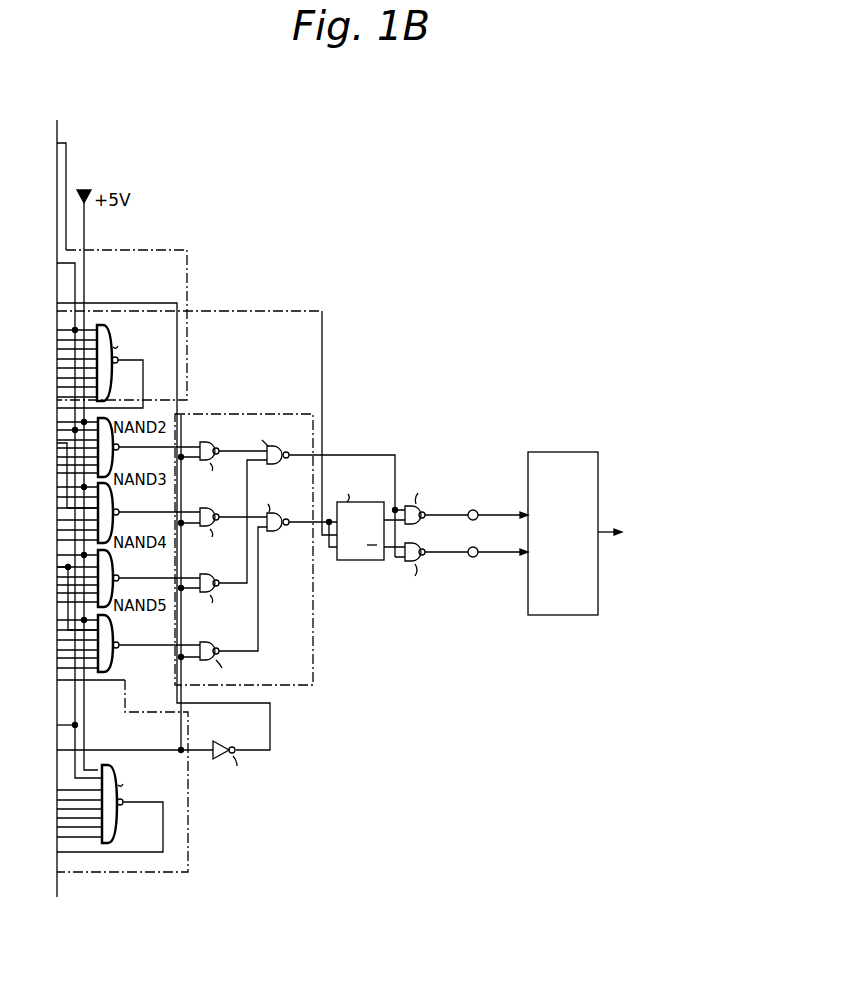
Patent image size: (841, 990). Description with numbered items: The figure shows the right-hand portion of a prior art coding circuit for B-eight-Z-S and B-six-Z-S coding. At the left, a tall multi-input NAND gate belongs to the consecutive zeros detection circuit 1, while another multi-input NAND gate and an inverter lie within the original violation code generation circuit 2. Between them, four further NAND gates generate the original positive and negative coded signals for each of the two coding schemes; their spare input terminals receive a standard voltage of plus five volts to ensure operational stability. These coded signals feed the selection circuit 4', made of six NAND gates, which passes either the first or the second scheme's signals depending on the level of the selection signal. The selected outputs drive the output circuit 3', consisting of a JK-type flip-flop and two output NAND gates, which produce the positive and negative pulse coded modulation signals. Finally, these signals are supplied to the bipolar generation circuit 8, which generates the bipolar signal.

The consecutive zeros detection circuit 1 is at (175, 250).
The original violation code generation circuit 2 is at (190, 858).
The output circuit 3' is at (428, 558).
The selection circuit 4' is at (285, 529).
The bipolar generation circuit 8 is at (590, 452).